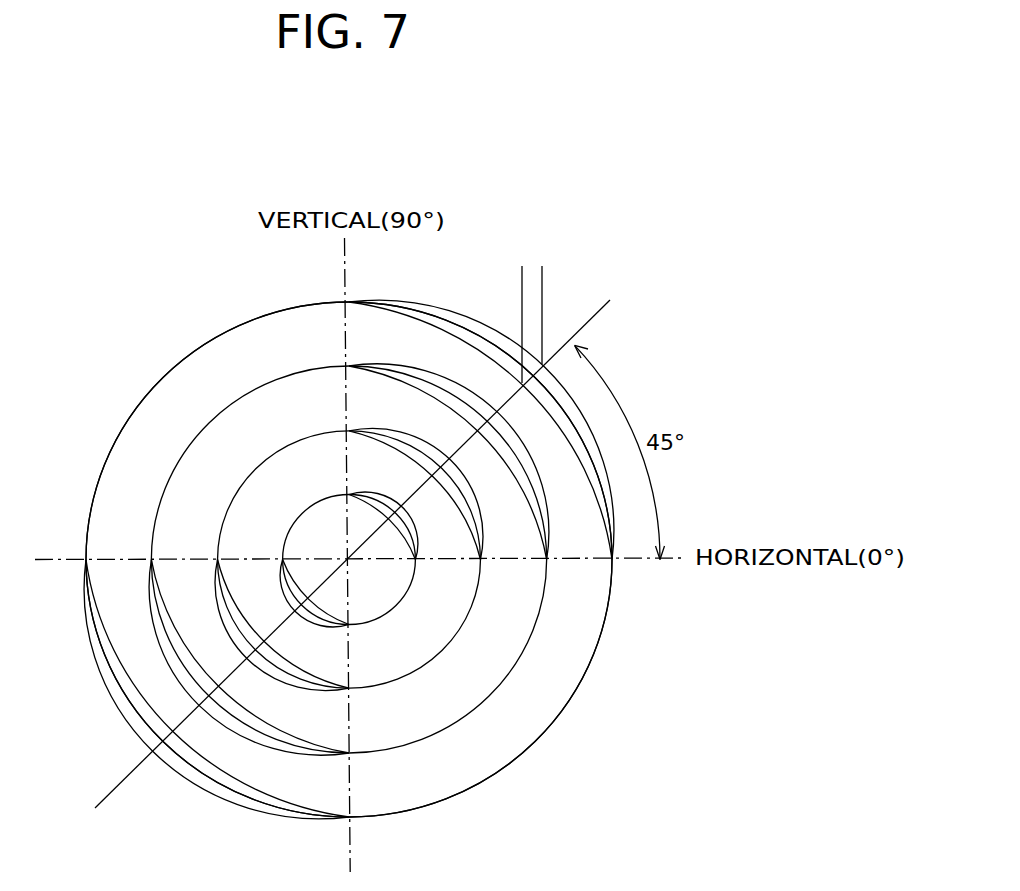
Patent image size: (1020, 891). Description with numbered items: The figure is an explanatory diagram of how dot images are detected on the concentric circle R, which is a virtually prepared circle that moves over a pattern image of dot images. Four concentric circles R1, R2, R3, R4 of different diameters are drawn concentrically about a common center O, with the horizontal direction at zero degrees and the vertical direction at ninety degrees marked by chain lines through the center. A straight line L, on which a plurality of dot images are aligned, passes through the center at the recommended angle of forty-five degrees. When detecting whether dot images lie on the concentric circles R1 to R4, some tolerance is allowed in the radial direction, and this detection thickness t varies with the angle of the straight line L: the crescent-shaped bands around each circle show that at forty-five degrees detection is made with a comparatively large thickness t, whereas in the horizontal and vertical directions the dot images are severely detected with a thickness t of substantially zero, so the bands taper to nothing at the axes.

The concentric circle R is at (455, 805).
The first concentric circle R1 is at (410, 583).
The second concentric circle R2 is at (460, 627).
The third concentric circle R3 is at (515, 663).
The fourth concentric circle R4 is at (565, 707).
The straight line L is at (341, 570).
The center point O is at (365, 574).
The detection thickness t is at (490, 277).